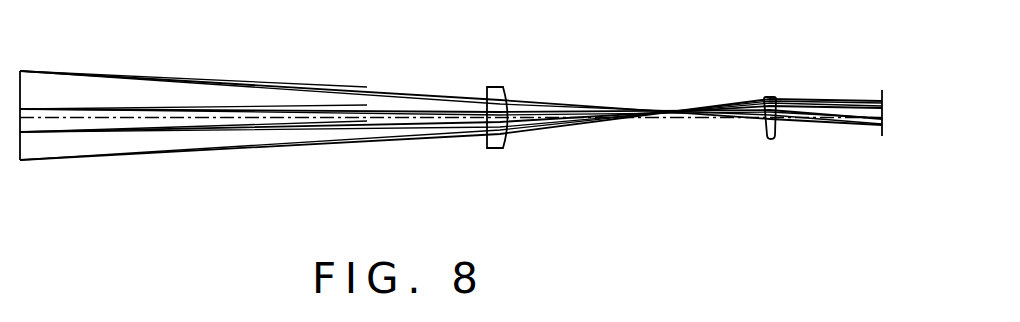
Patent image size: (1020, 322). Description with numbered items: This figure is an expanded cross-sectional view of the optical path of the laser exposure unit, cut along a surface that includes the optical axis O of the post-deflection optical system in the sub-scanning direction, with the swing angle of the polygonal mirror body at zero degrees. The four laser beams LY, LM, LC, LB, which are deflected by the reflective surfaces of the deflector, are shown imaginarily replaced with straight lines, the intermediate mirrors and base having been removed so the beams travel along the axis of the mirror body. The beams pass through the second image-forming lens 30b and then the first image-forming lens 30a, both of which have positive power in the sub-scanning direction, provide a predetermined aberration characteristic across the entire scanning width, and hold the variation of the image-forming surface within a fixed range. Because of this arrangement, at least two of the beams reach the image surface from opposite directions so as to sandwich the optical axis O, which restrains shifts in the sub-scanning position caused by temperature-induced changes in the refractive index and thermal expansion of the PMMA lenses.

The optical axis O is at (37, 118).
The laser beam LY is at (88, 71).
The laser beam LM is at (138, 108).
The laser beam LC is at (162, 134).
The laser beam LB is at (100, 158).
The second image-forming lens 30b is at (498, 87).
The first image-forming lens 30a is at (770, 96).